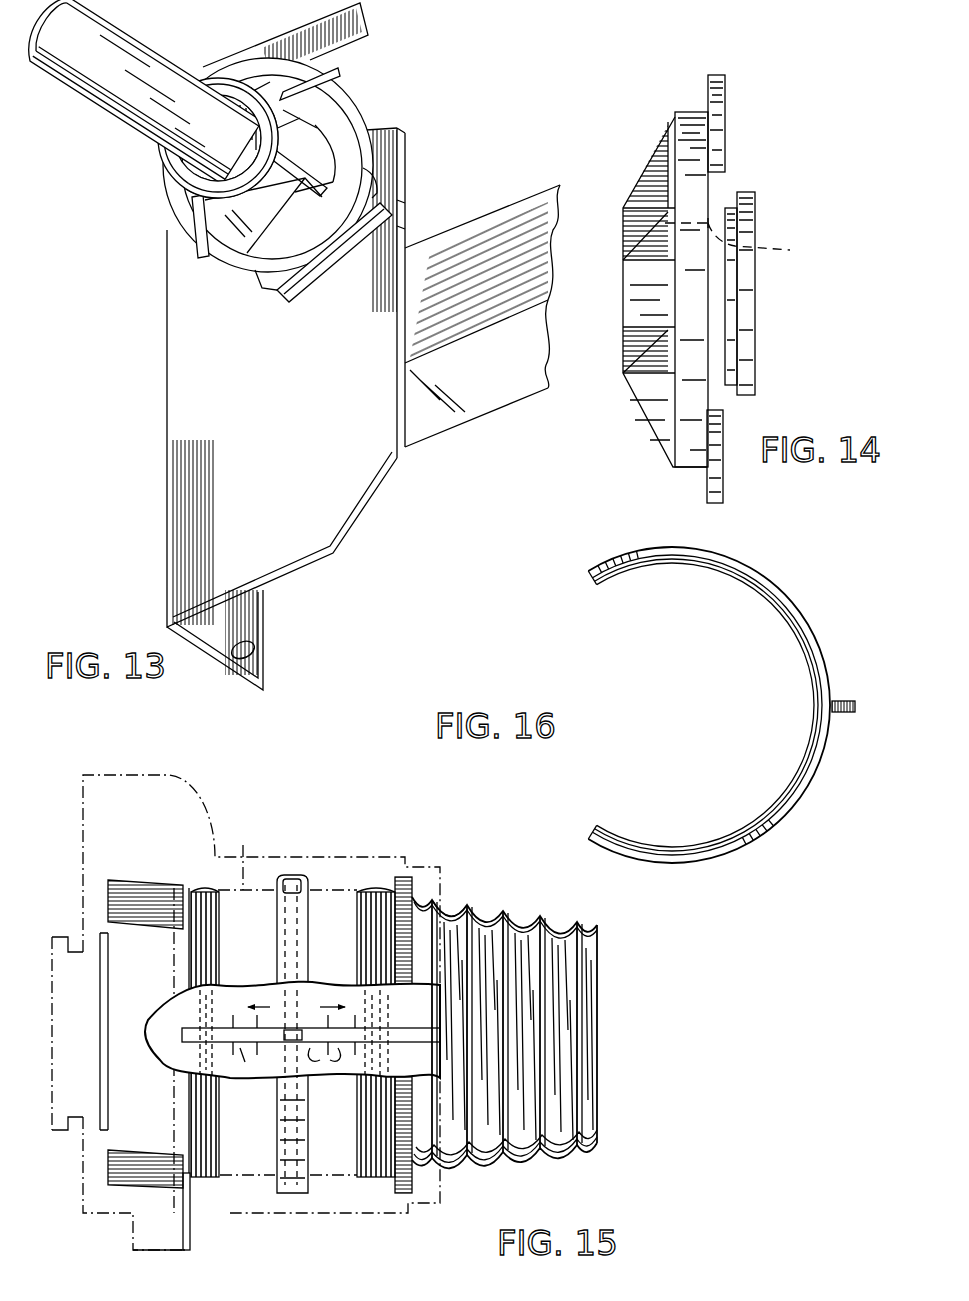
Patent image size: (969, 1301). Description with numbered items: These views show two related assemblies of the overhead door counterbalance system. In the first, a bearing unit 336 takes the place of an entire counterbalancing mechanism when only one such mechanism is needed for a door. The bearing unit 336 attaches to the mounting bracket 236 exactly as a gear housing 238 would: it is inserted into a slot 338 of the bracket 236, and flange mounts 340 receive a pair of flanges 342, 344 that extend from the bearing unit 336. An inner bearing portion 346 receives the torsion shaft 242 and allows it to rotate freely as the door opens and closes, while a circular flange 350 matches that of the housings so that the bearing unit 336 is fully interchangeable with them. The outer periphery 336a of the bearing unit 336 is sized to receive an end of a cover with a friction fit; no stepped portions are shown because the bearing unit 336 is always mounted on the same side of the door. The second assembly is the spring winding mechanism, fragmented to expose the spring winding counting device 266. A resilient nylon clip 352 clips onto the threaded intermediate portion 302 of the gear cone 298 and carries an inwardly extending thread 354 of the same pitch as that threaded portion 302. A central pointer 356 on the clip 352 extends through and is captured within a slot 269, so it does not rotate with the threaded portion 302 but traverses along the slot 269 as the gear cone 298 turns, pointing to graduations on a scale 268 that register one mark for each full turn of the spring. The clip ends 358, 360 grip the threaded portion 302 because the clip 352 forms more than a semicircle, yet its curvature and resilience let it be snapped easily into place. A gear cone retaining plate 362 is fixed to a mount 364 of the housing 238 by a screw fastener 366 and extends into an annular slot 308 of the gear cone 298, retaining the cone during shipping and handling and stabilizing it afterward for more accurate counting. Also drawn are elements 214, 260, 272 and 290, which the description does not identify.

In FIG. 13, the frame member 214 is at (553, 186).
In FIG. 13, the mounting bracket 236 is at (202, 490).
In FIG. 15, the gear housing 238 is at (232, 965).
In FIG. 13, the torsion shaft 242 is at (152, 43).
In FIG. 15, the corrugated conduit 260 is at (522, 918).
In FIG. 16, the counting device 266 is at (780, 566).
In FIG. 15, the counting device 266 is at (320, 874).
In FIG. 15, the scale 268 is at (345, 1062).
In FIG. 15, the slot 269 is at (250, 1046).
In FIG. 15, the housing 272 is at (78, 945).
In FIG. 15, the housing wall 290 is at (68, 1133).
In FIG. 15, the gear cone 298 is at (476, 908).
In FIG. 15, the threaded intermediate portion 302 is at (197, 893).
In FIG. 15, the annular slot 308 is at (188, 888).
In FIG. 13, the bearing unit 336 is at (365, 99).
In FIG. 14, the bearing unit 336 is at (632, 447).
In FIG. 13, the outer periphery 336a is at (372, 148).
In FIG. 14, the outer periphery 336a is at (695, 110).
In FIG. 13, the slot 338 is at (360, 50).
In FIG. 13, the flange mount 340 is at (365, 224).
In FIG. 14, the flange mount 340 is at (736, 207).
In FIG. 13, the flange 342 is at (375, 192).
In FIG. 14, the flange 342 is at (707, 490).
In FIG. 14, the flange 344 is at (725, 100).
In FIG. 13, the inner bearing portion 346 is at (185, 182).
In FIG. 14, the inner bearing portion 346 is at (750, 239).
In FIG. 14, the circular flange 350 is at (755, 195).
In FIG. 16, the clip 352 is at (806, 618).
In FIG. 15, the clip 352 is at (303, 1195).
In FIG. 16, the inwardly extending thread 354 is at (770, 695).
In FIG. 15, the inwardly extending thread 354 is at (303, 950).
In FIG. 15, the central pointer 356 is at (278, 1034).
In FIG. 16, the clip end 358 is at (588, 576).
In FIG. 16, the clip end 360 is at (592, 835).
In FIG. 15, the gear cone retaining plate 362 is at (190, 1198).
In FIG. 15, the mount 364 is at (140, 1258).
In FIG. 15, the screw fastener 366 is at (192, 1218).